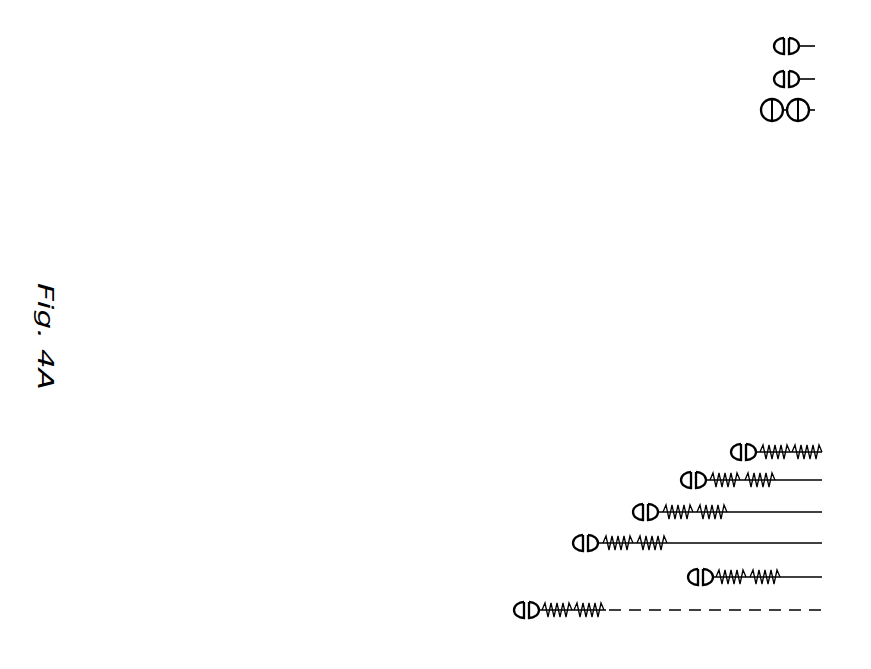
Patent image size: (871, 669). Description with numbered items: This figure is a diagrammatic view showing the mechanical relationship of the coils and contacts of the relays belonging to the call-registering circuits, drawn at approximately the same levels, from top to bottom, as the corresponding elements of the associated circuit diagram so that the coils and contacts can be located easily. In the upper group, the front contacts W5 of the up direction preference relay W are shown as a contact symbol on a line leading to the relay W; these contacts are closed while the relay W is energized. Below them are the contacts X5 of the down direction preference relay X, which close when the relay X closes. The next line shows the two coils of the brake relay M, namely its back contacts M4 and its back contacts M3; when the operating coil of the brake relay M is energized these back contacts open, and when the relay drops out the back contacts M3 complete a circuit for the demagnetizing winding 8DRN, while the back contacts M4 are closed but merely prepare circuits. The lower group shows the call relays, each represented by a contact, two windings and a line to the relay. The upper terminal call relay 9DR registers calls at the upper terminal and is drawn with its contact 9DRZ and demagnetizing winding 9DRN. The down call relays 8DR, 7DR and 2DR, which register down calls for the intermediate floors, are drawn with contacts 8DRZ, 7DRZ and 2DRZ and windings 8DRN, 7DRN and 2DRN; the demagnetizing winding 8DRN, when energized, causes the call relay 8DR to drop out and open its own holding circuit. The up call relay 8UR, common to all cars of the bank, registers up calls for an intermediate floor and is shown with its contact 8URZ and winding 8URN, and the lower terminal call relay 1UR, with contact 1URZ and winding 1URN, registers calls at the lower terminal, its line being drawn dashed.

The front contacts of up direction preference relay W5 is at (774, 46).
The up direction preference relay W is at (820, 45).
The contacts of down direction preference relay X5 is at (774, 79).
The down direction preference relay X is at (819, 78).
The back contacts of brake relay M4 is at (761, 110).
The back contacts of brake relay M3 is at (803, 121).
The brake relay M is at (824, 109).
The contact 9DRZ is at (731, 452).
The relay winding 9DRN is at (767, 448).
The upper terminal call relay 9DR is at (765, 447).
The contact 8DRZ is at (681, 480).
The demagnetizing winding of call relay 8DR 8DRN is at (718, 476).
The down call relay 8DR is at (765, 473).
The contact 7DRZ is at (633, 512).
The relay winding 7DRN is at (717, 508).
The down call relay 7DR is at (708, 507).
The contact 2DRZ is at (573, 543).
The relay winding 2DRN is at (660, 539).
The down call relay 2DR is at (660, 538).
The contact 8URZ is at (688, 577).
The relay winding 8URN is at (735, 571).
The up call relay 8UR is at (742, 570).
The contact 1URZ is at (514, 610).
The relay winding 1URN is at (583, 605).
The lower terminal call relay 1UR is at (587, 604).